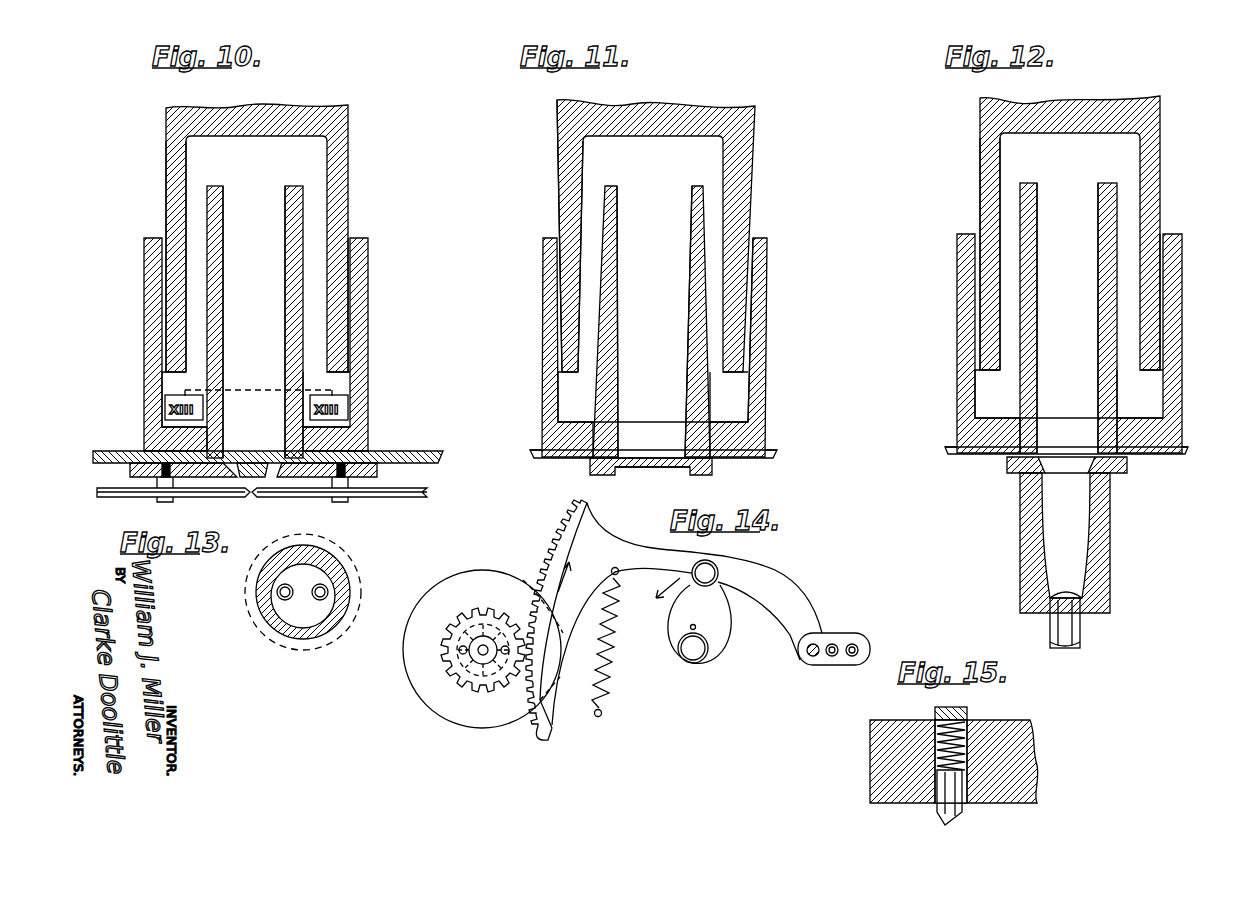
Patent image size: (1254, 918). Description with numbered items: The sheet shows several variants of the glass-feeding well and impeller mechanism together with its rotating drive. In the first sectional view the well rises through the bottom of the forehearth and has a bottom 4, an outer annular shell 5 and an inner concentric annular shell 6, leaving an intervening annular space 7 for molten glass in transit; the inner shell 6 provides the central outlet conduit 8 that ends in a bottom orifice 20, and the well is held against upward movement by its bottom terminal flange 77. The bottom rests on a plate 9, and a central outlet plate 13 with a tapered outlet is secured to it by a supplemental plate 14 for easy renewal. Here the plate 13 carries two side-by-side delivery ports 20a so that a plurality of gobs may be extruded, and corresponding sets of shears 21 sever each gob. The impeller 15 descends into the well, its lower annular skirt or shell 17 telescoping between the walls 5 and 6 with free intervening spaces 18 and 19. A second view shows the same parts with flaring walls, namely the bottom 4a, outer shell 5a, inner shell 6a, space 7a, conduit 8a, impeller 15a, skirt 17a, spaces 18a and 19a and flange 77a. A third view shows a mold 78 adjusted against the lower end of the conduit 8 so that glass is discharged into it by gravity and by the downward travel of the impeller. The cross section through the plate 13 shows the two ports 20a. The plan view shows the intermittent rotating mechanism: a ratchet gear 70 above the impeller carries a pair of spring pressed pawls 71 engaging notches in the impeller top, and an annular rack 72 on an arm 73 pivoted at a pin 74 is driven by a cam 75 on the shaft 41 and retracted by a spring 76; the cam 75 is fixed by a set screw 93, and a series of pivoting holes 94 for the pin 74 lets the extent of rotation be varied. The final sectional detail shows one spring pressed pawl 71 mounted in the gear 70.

In FIG. 12, the bottom 4 is at (1152, 446).
In FIG. 11, the bottom 4a is at (734, 444).
In FIG. 10, the outer annular shell 5 is at (366, 275).
In FIG. 12, the outer annular shell 5 is at (1178, 335).
In FIG. 11, the outer annular shell 5a is at (768, 284).
In FIG. 10, the inner concentric annular shell 6 is at (222, 218).
In FIG. 12, the inner concentric annular shell 6 is at (1035, 243).
In FIG. 11, the inner concentric annular shell 6a is at (692, 218).
In FIG. 10, the annular space 7 is at (342, 389).
In FIG. 12, the annular space 7 is at (1140, 404).
In FIG. 11, the annular space 7a is at (705, 403).
In FIG. 10, the central outlet conduit 8 is at (254, 322).
In FIG. 12, the central outlet conduit 8 is at (1067, 318).
In FIG. 11, the central outlet conduit 8a is at (654, 321).
In FIG. 10, the plate 9 is at (410, 459).
In FIG. 10, the central outlet plate 13 is at (290, 470).
In FIG. 11, the central outlet plate 13 is at (622, 472).
In FIG. 12, the central outlet plate 13 is at (1015, 465).
In FIG. 13, the central outlet plate 13 is at (337, 578).
In FIG. 10, the supplemental plate 14 is at (363, 465).
In FIG. 10, the impeller 15 is at (170, 125).
In FIG. 12, the impeller 15 is at (990, 125).
In FIG. 14, the impeller 15 is at (481, 718).
In FIG. 11, the impeller 15a is at (570, 120).
In FIG. 10, the annular skirt or shell 17 is at (178, 175).
In FIG. 12, the annular skirt or shell 17 is at (990, 172).
In FIG. 11, the annular skirt or shell 17a is at (570, 175).
In FIG. 10, the free intervening space 18 is at (349, 308).
In FIG. 12, the free intervening space 18 is at (1157, 277).
In FIG. 11, the free intervening space 18a is at (743, 312).
In FIG. 10, the free intervening space 19 is at (315, 367).
In FIG. 12, the free intervening space 19 is at (1128, 368).
In FIG. 11, the free intervening space 19a is at (714, 370).
In FIG. 11, the bottom orifice 20 is at (670, 473).
In FIG. 12, the bottom orifice 20 is at (1035, 479).
In FIG. 10, the delivery ports 20a is at (268, 464).
In FIG. 13, the delivery ports 20a is at (286, 600).
In FIG. 10, the shears 21 is at (277, 494).
In FIG. 14, the shaft 41 is at (695, 661).
In FIG. 14, the ratchet gear 70 is at (455, 678).
In FIG. 15, the ratchet gear 70 is at (886, 763).
In FIG. 14, the spring pressed pawls 71 is at (503, 645).
In FIG. 15, the spring pressed pawls 71 is at (964, 810).
In FIG. 14, the annular rack 72 is at (561, 523).
In FIG. 14, the arm 73 is at (634, 549).
In FIG. 14, the pin 74 is at (822, 641).
In FIG. 14, the cam 75 is at (713, 617).
In FIG. 14, the spring 76 is at (607, 690).
In FIG. 12, the bottom terminal flange 77 is at (1185, 456).
In FIG. 11, the bottom terminal flange 77a is at (771, 459).
In FIG. 12, the mold 78 is at (1112, 541).
In FIG. 14, the set screw 93 is at (690, 628).
In FIG. 14, the pivoting holes 94 is at (852, 657).